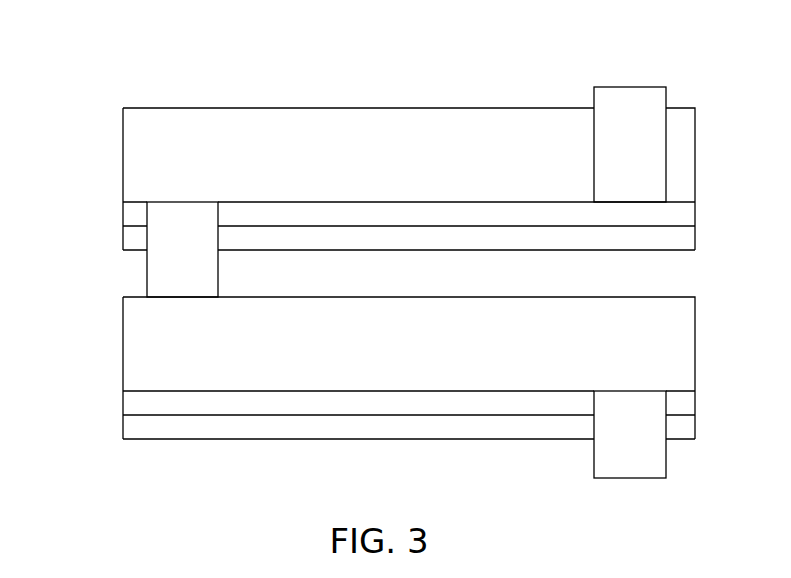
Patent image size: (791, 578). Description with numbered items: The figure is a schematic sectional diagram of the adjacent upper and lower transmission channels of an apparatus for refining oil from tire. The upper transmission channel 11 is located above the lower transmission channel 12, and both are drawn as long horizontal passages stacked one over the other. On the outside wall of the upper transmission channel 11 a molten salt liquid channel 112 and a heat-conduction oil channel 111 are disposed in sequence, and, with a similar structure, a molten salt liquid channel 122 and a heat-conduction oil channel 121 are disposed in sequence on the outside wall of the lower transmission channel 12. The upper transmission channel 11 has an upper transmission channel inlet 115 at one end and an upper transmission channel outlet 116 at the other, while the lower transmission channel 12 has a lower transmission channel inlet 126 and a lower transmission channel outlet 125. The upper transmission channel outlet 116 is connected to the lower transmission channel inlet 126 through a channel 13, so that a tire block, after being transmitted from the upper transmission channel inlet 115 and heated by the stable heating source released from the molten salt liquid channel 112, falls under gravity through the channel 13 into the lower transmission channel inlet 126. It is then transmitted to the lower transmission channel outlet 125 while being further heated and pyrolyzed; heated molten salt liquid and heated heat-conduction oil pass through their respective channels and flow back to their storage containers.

The upper transmission channel 11 is at (321, 88).
The lower transmission channel 12 is at (290, 451).
The channel 13 is at (147, 278).
The heat-conduction oil channel 111 is at (135, 243).
The molten salt liquid channel 112 is at (135, 214).
The upper transmission channel inlet 115 is at (612, 203).
The upper transmission channel outlet 116 is at (172, 202).
The heat-conduction oil channel 121 is at (140, 433).
The molten salt liquid channel 122 is at (140, 404).
The lower transmission channel outlet 125 is at (629, 391).
The lower transmission channel inlet 126 is at (182, 298).